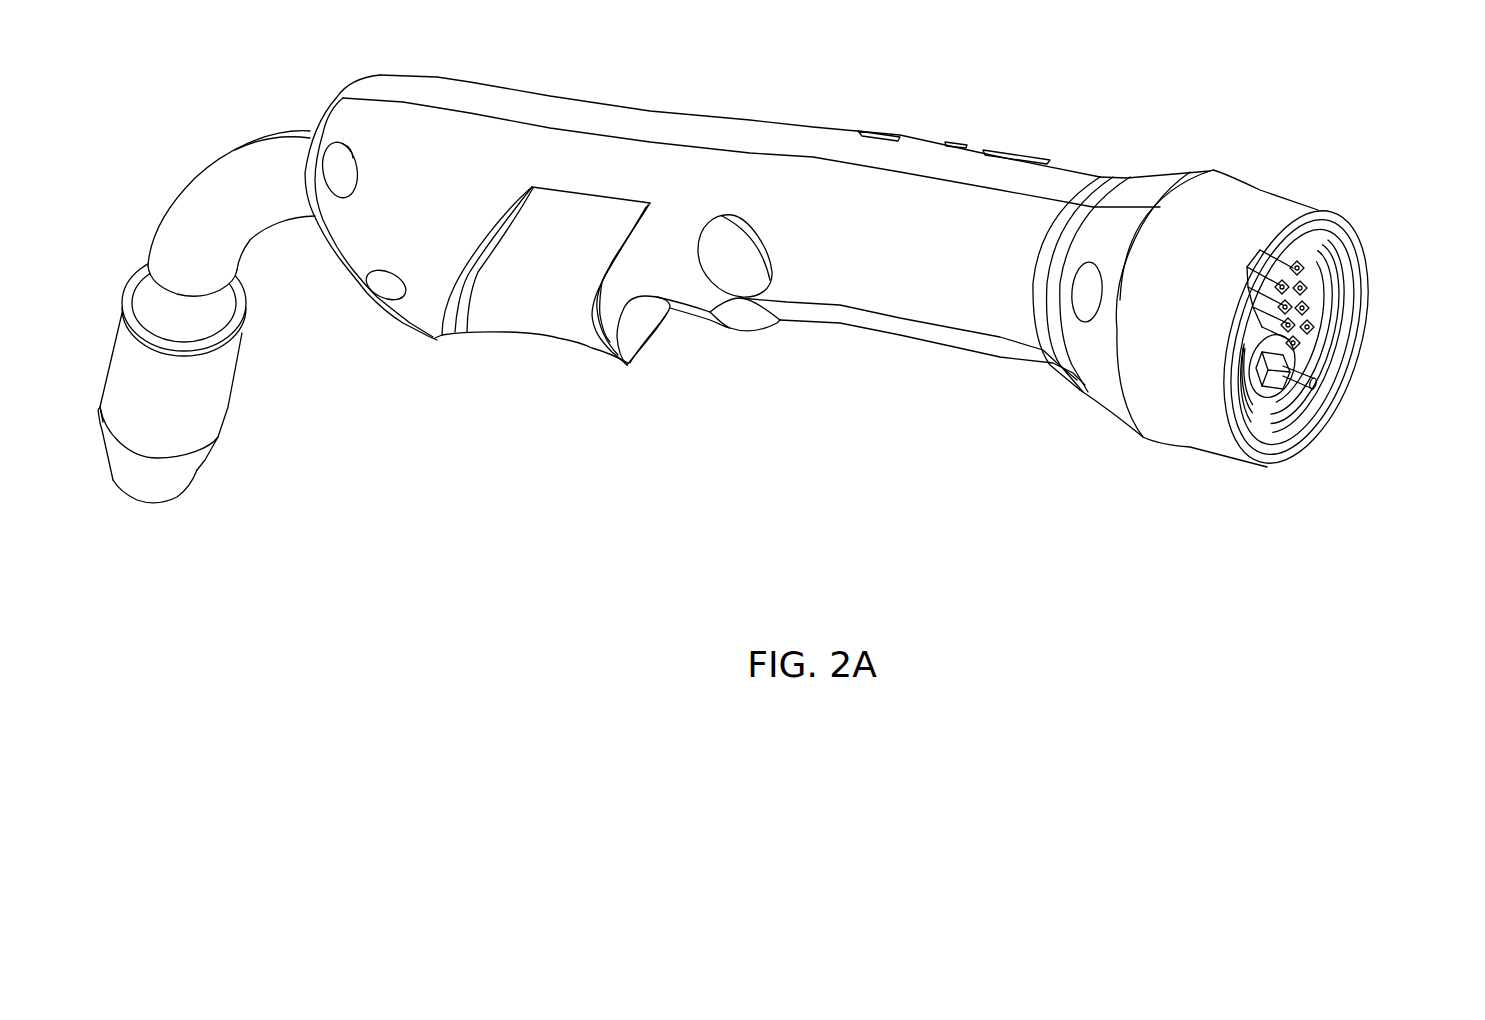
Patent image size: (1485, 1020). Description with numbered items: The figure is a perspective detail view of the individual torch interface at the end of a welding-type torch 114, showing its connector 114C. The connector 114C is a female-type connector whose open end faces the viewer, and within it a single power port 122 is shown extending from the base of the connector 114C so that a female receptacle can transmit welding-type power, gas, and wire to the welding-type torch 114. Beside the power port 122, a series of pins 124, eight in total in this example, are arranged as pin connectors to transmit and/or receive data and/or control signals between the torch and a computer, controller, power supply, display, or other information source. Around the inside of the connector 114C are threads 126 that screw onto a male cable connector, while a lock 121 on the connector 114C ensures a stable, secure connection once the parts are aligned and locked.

The welding-type torch 114 is at (750, 121).
The connector 114C is at (1396, 206).
The lock 121 is at (1267, 194).
The power port 122 is at (1274, 403).
The pins 124 is at (1318, 299).
The threads 126 is at (1329, 248).